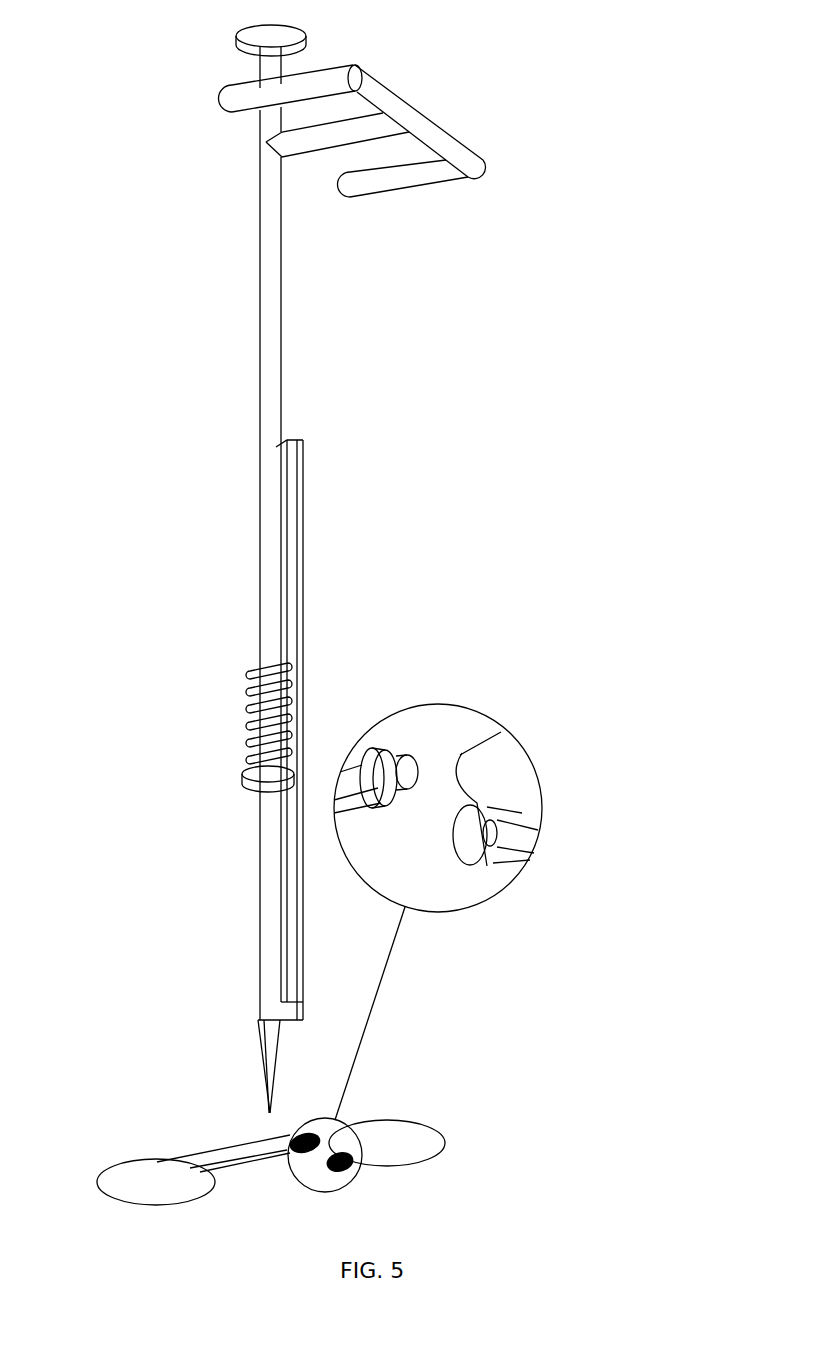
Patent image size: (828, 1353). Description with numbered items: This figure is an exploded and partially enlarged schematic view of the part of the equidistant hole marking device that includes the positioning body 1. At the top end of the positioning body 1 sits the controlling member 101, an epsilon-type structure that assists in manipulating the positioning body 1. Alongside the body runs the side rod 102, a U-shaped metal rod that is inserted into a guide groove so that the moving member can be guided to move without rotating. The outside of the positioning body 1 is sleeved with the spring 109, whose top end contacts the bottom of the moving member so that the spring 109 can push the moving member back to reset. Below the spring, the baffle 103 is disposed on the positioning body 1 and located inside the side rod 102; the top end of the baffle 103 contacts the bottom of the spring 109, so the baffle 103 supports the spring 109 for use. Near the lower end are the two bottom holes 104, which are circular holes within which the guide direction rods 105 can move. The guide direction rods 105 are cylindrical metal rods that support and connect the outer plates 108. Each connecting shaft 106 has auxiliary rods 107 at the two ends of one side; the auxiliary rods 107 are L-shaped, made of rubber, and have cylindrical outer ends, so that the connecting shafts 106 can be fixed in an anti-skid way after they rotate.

The positioning body 1 is at (272, 260).
The controlling member 101 is at (435, 118).
The side rod 102 is at (300, 488).
The baffle 103 is at (247, 783).
The bottom holes 104 is at (277, 995).
The guide direction rods 105 is at (348, 760).
The connecting shaft 106 is at (418, 771).
The auxiliary rods 107 is at (386, 757).
The outer plates 108 is at (397, 1142).
The spring 109 is at (265, 723).